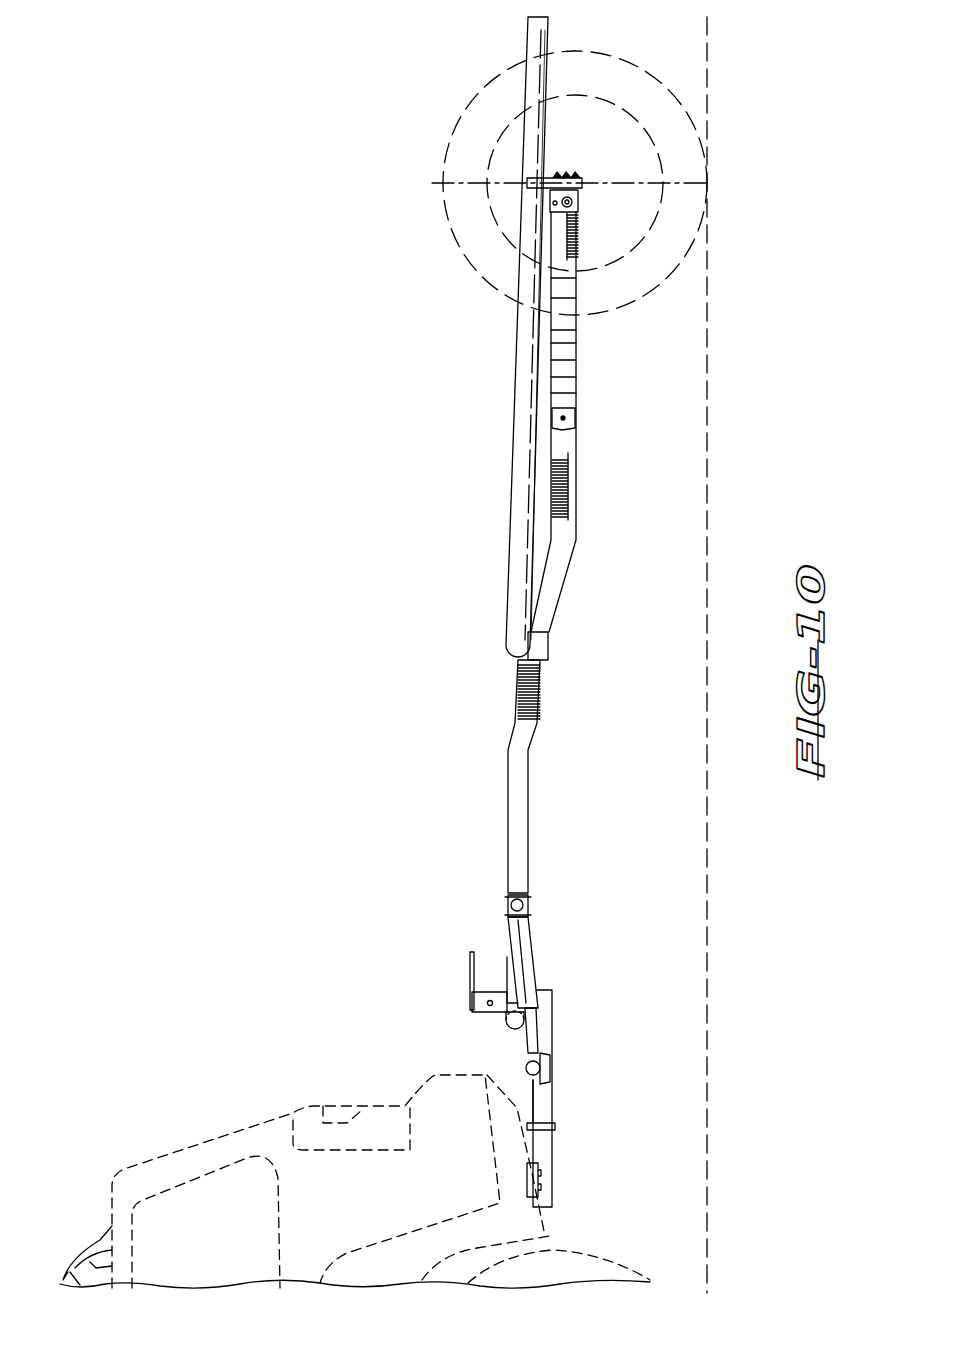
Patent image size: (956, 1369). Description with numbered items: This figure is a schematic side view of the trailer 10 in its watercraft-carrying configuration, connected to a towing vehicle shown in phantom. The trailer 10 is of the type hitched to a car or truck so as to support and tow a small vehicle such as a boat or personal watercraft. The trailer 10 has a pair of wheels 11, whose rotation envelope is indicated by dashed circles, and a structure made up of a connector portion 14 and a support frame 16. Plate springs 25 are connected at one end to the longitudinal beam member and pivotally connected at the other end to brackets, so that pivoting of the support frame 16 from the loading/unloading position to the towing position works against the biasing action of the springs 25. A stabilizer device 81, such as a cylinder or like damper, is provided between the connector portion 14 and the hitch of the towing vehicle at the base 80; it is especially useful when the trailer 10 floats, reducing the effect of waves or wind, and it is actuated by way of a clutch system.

The trailer 10 is at (430, 634).
The wheels 11 is at (456, 127).
The connector portion 14 is at (518, 808).
The support frame 16 is at (517, 438).
The springs 25 is at (560, 362).
The base support 80 is at (545, 1107).
The stabilizer device 81 is at (525, 953).